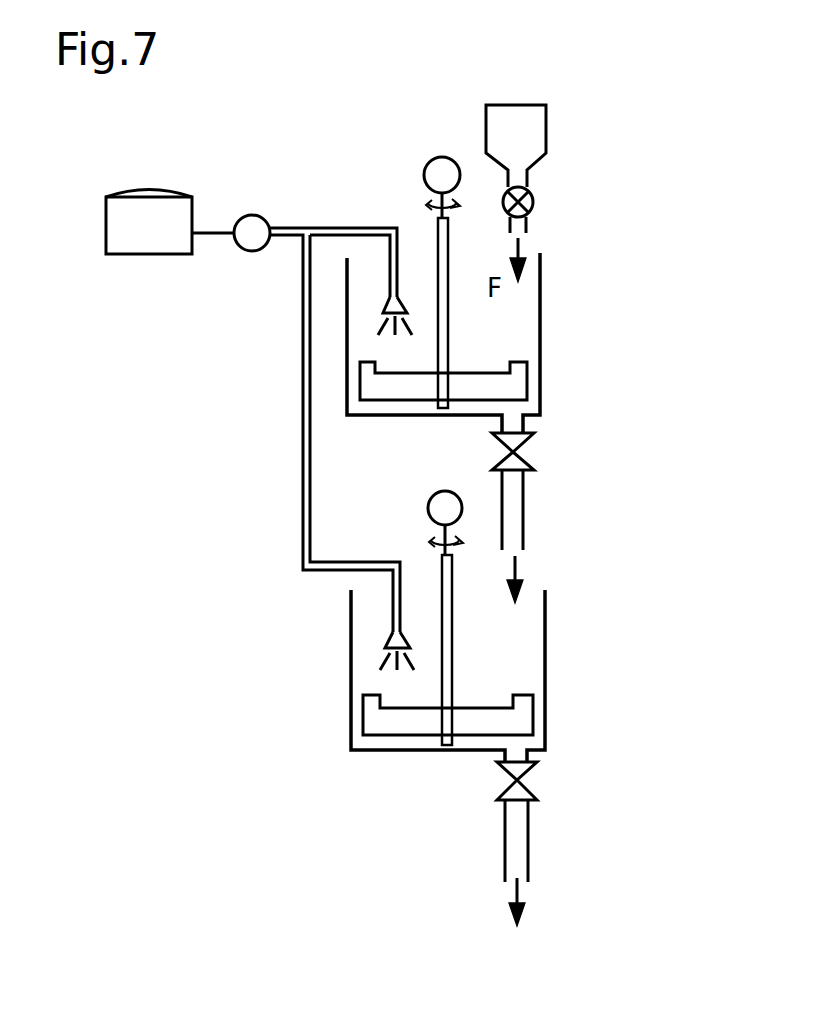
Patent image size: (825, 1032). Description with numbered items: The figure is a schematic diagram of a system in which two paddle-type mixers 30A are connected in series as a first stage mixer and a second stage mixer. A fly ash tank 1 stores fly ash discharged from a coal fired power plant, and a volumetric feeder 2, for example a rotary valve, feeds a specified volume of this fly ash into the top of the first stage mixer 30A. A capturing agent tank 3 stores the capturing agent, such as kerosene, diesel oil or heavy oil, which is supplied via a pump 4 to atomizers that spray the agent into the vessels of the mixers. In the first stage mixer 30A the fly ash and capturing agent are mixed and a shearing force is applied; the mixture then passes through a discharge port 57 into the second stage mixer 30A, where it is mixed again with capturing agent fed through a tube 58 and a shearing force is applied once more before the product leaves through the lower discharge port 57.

The fly ash tank 1 is at (548, 131).
The volumetric feeder 2 is at (533, 200).
The capturing agent tank 3 is at (168, 196).
The pump 4 is at (262, 216).
The mixer 30A is at (631, 260).
The discharge port 57 is at (530, 442).
The tube 58 is at (302, 403).